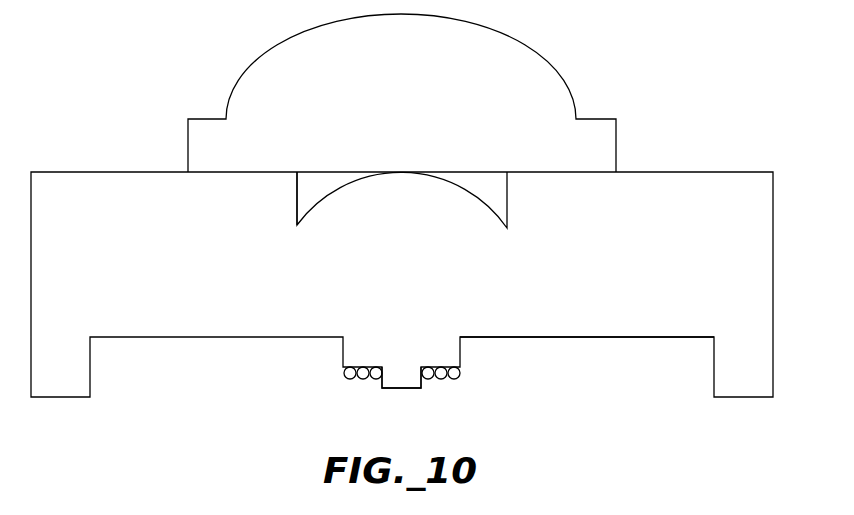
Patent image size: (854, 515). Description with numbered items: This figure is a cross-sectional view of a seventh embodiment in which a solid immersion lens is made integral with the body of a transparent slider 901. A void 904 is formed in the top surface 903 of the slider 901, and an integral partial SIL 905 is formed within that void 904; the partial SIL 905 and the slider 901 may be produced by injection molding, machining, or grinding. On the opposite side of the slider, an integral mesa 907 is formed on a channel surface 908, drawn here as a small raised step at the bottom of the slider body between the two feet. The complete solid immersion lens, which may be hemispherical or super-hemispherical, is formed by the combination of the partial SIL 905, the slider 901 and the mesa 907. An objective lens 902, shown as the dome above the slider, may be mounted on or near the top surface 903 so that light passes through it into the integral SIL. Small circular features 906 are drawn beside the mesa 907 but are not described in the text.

The slider 901 is at (648, 160).
The objective lens 902 is at (420, 100).
The top surface 903 is at (63, 171).
The void 904 is at (297, 194).
The partial SIL 905 is at (420, 226).
The wire leads 906 is at (348, 380).
The mesa 907 is at (400, 380).
The channel surface 908 is at (637, 340).